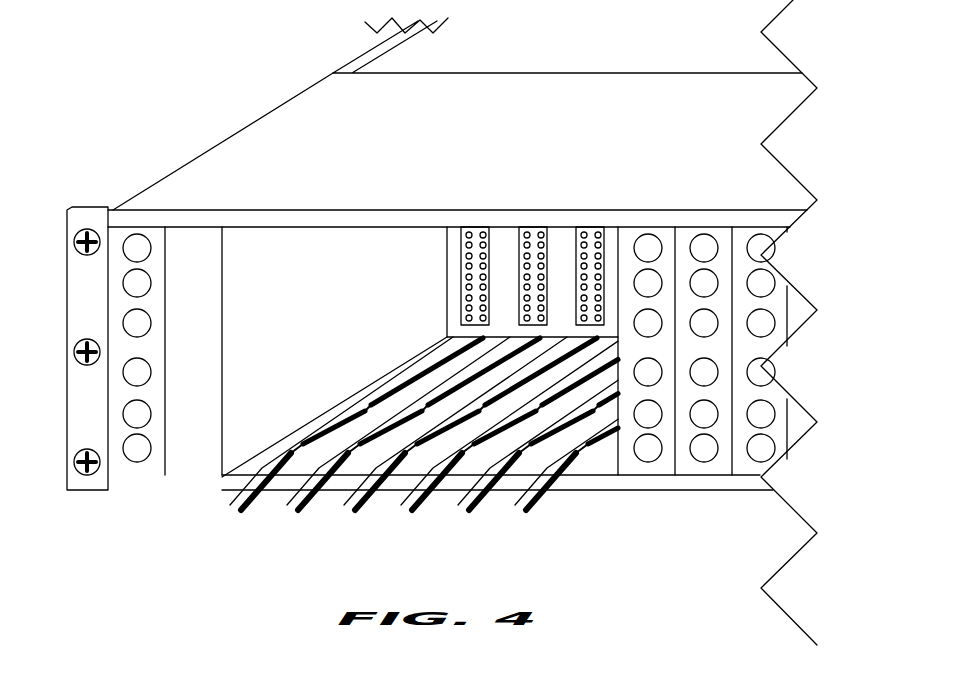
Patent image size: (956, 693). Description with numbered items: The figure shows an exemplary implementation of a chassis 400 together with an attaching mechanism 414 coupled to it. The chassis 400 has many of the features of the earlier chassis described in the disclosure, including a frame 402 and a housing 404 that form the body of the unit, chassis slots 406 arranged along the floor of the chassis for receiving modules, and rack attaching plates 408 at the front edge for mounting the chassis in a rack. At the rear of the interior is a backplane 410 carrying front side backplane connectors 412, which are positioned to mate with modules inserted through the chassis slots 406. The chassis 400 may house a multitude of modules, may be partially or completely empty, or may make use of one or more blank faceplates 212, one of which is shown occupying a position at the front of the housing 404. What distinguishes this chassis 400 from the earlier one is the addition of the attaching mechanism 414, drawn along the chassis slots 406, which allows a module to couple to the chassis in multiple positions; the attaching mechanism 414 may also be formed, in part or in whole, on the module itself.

The chassis 400 is at (192, 60).
The frame 402 is at (353, 62).
The housing 404 is at (220, 138).
The blank faceplate 212 is at (193, 255).
The rack attaching plate 408 is at (80, 490).
The chassis slot 406 is at (250, 482).
The attaching mechanism 414 is at (277, 527).
The front side backplane connector 412 is at (492, 327).
The backplane 410 is at (562, 310).